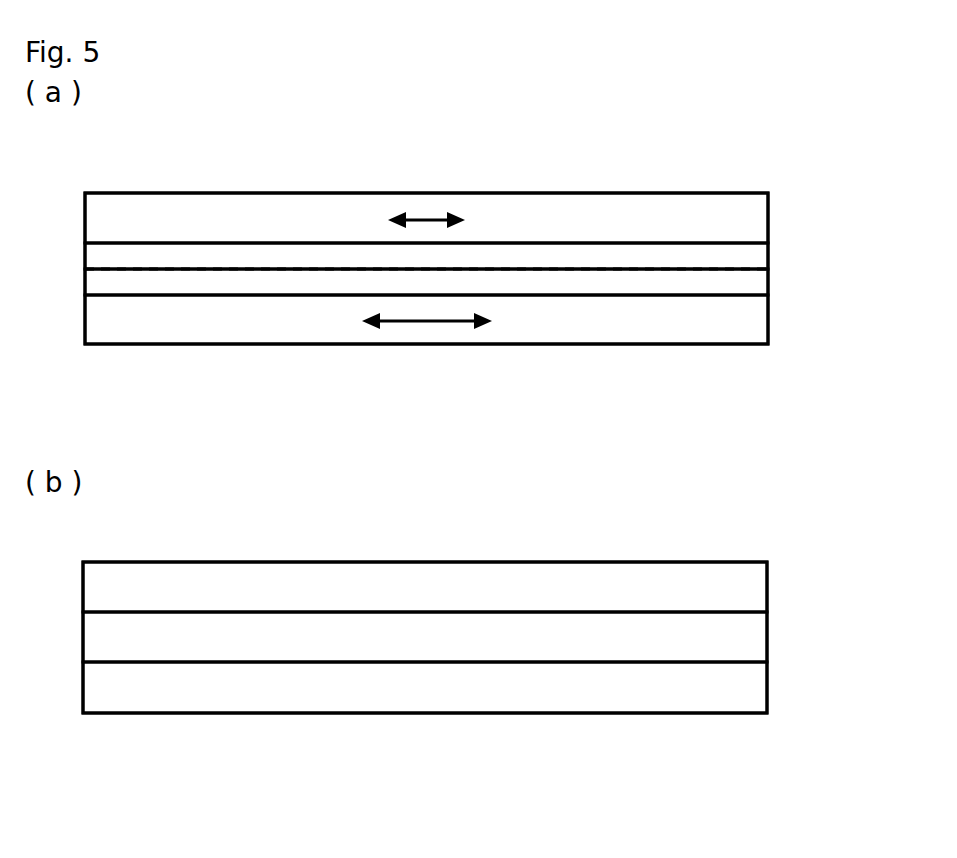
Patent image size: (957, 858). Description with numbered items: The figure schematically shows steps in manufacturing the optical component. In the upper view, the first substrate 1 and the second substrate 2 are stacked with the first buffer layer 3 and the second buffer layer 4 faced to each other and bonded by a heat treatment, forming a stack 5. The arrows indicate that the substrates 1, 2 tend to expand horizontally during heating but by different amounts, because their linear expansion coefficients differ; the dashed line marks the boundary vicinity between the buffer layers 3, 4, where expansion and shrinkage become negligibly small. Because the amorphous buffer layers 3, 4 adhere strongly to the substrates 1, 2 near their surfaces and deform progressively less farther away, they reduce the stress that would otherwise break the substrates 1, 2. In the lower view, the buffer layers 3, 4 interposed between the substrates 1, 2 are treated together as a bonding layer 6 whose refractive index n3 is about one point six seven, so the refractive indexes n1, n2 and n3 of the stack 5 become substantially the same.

The first substrate 1 is at (768, 330).
The second substrate 2 is at (768, 206).
The first buffer layer 3 is at (768, 282).
The second buffer layer 4 is at (768, 262).
The stack 5 is at (795, 423).
The bonding layer 6 is at (767, 636).